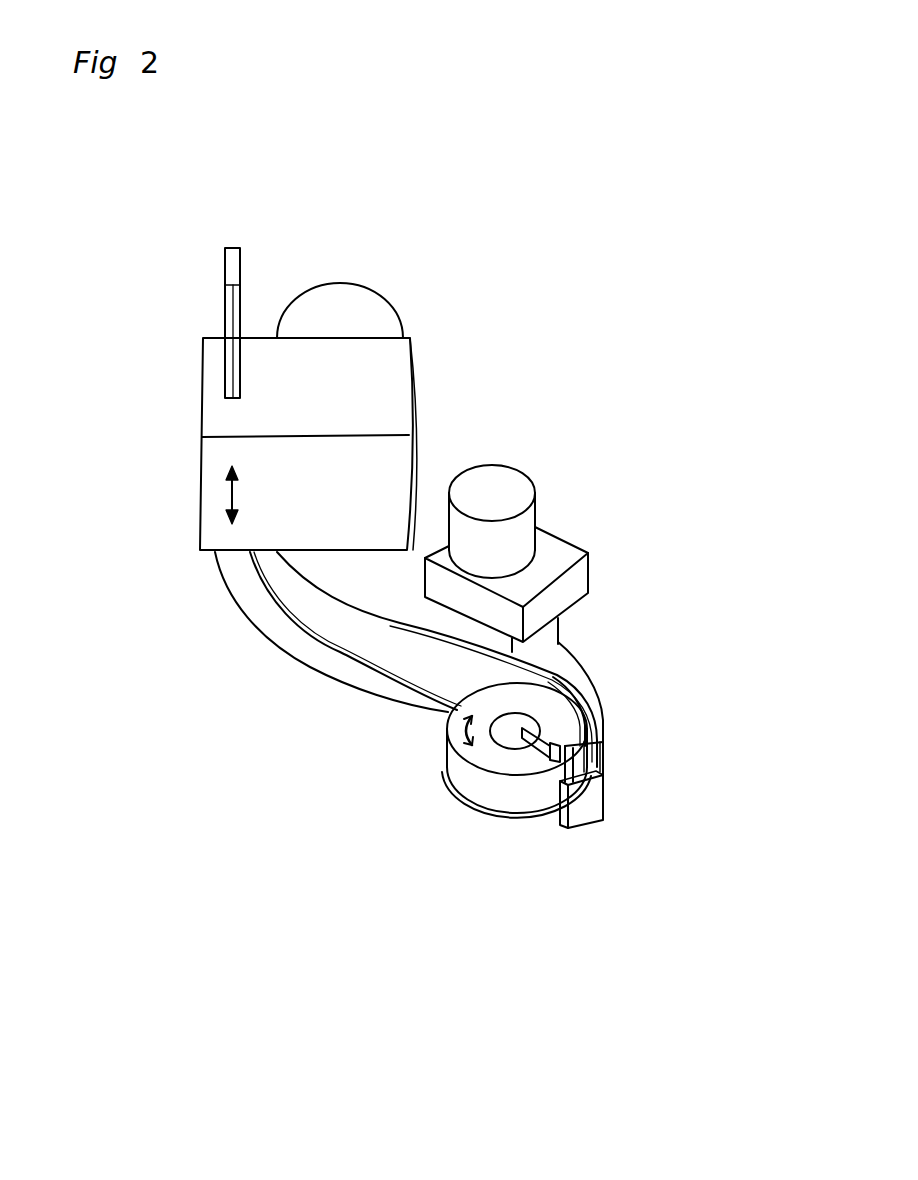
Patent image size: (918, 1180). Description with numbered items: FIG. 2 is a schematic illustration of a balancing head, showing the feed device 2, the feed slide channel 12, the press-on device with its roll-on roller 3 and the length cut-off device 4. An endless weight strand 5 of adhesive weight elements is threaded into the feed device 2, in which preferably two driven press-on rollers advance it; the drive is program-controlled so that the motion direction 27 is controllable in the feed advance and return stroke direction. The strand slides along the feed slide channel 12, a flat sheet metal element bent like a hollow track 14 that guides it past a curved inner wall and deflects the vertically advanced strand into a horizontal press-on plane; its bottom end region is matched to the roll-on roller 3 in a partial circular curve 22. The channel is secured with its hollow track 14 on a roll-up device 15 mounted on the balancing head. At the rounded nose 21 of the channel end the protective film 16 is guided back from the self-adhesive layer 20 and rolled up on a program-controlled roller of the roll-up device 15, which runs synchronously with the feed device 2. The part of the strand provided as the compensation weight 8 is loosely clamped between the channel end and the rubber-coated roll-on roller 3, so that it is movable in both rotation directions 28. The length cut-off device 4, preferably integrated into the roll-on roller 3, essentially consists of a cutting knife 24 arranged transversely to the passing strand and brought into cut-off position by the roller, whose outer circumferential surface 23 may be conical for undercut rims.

The feed device 2 is at (203, 412).
The endless weight strand 5 is at (225, 293).
The motion direction 27 is at (230, 492).
The feed slide channel 12 is at (274, 640).
The roll-up device 15 is at (567, 540).
The protective film 16 is at (567, 645).
The hollow track 14 is at (563, 668).
The partial circular curve 22 is at (592, 695).
The roll-on roller 3 is at (495, 762).
The outer circumferential surface 23 is at (448, 793).
The rotation directions 28 is at (463, 733).
The length cut-off device 4 is at (533, 743).
The cutting knife 24 is at (592, 745).
The rounded nose 21 is at (607, 762).
The self-adhesive layer 20 is at (585, 800).
The compensation weight 8 is at (595, 820).